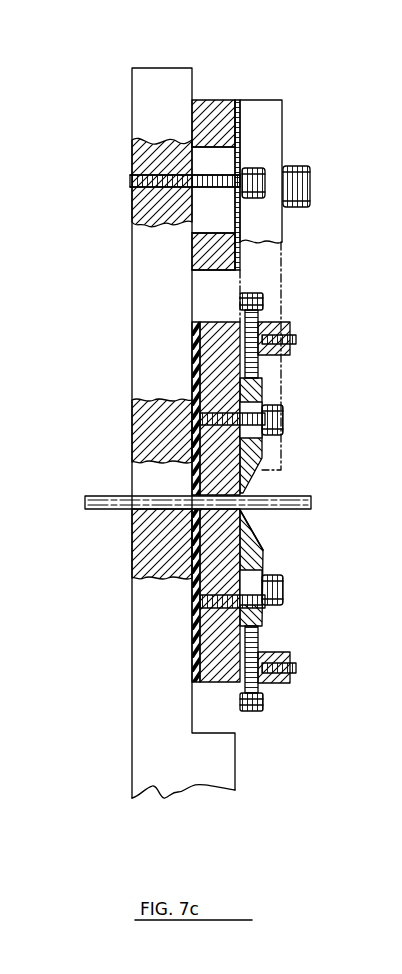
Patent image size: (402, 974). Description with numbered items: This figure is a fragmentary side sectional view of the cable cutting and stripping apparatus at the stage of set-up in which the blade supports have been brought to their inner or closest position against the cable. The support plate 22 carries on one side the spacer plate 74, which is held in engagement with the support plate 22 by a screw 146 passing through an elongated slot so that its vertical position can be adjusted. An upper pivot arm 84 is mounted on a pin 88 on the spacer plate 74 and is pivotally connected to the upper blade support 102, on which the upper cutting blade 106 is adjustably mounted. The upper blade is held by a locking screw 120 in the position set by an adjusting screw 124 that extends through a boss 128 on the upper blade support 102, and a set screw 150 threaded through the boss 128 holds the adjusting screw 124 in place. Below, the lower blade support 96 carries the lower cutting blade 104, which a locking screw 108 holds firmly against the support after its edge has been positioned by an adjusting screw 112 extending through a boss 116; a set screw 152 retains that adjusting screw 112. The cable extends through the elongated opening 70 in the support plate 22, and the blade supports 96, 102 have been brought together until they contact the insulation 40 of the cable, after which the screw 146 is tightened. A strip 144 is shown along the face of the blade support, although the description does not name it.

The support plate 22 is at (145, 312).
The spacer plate 74 is at (220, 125).
The upper pivot arm 84 is at (257, 128).
The screw 146 is at (251, 182).
The pin 88 is at (305, 185).
The adjusting screw 124 is at (250, 298).
The boss 128 is at (278, 333).
The set screw 150 is at (296, 339).
The liner strip 144 is at (196, 372).
The upper blade support 102 is at (195, 440).
The upper cutting blade 106 is at (262, 462).
The locking screw 120 is at (284, 418).
The elongated opening 70 is at (168, 483).
The insulation 40 is at (300, 498).
The lower blade support 96 is at (262, 534).
The lower cutting blade 104 is at (262, 555).
The locking screw 108 is at (285, 590).
The boss 116 is at (265, 663).
The set screw 152 is at (296, 670).
The adjusting screw 112 is at (252, 712).